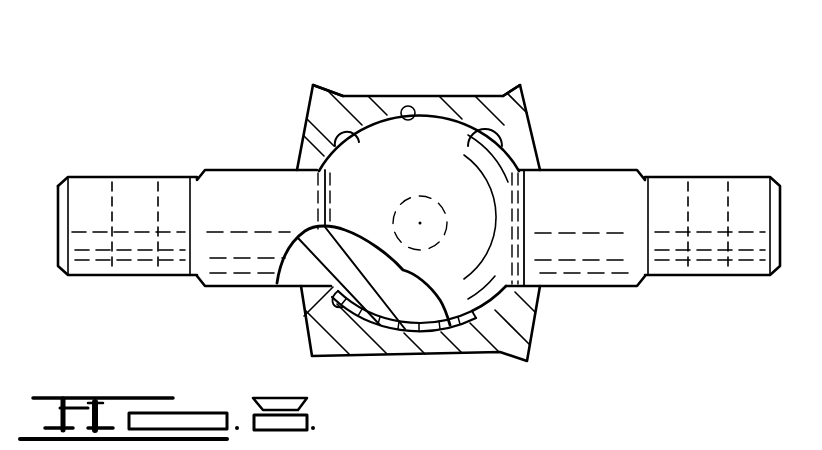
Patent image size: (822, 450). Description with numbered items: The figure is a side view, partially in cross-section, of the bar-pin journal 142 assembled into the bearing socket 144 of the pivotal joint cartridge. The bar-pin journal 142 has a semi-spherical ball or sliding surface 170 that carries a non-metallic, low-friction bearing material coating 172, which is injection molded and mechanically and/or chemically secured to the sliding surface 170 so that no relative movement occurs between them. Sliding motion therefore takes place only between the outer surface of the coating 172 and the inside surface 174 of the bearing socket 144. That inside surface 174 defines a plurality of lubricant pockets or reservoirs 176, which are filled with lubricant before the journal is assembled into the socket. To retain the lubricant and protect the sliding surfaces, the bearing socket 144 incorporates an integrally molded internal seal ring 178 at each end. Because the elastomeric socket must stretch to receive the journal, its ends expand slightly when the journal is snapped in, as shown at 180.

The bar-pin journal 142 is at (174, 304).
The bearing socket 144 is at (528, 110).
The semi-spherical ball or sliding surface 170 is at (398, 332).
The bearing material coating 172 is at (461, 332).
The inside surface 174 is at (408, 106).
The lubricant pockets or reservoirs 176 is at (492, 133).
The internal seal ring 178 is at (337, 143).
The expanded socket ends 180 is at (339, 84).